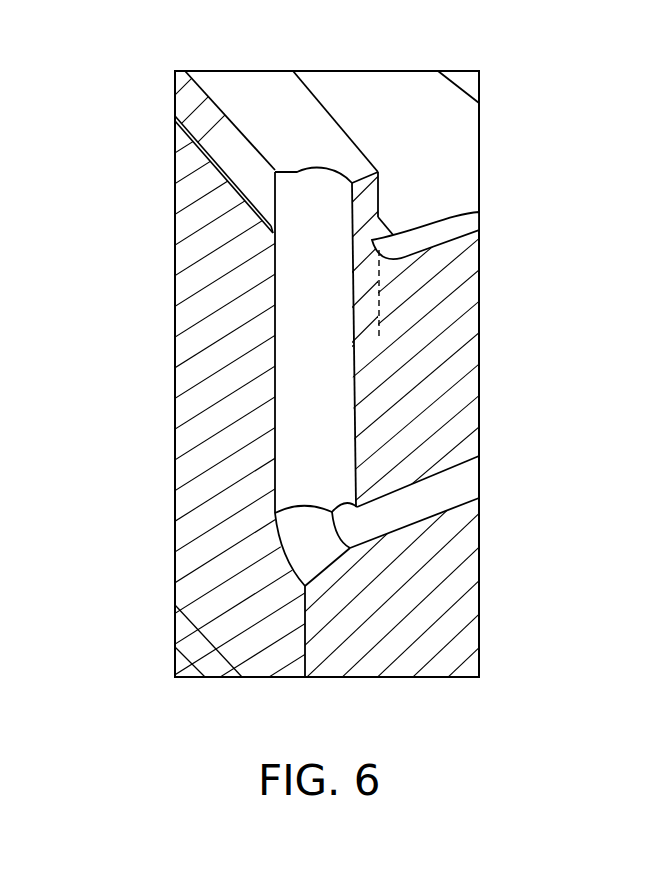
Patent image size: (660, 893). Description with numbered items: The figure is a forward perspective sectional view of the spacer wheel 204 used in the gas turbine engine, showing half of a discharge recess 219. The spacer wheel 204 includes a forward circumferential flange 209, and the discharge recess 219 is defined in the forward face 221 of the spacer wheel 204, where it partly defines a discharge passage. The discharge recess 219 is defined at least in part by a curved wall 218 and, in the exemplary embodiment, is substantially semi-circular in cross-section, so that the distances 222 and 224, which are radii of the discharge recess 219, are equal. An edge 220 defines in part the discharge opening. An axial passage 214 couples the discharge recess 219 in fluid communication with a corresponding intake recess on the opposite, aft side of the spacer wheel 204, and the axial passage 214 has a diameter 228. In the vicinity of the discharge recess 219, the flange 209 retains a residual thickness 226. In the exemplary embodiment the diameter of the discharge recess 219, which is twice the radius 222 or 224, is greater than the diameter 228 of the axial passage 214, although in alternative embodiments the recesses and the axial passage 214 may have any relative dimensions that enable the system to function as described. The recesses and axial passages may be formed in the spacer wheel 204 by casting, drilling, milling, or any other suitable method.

The spacer wheel 204 is at (429, 628).
The forward circumferential flange 209 is at (479, 212).
The axial passage 214 is at (403, 503).
The curved wall 218 is at (336, 421).
The discharge recess 219 is at (307, 308).
The edge 220 is at (268, 219).
The forward face 221 is at (218, 258).
The distance 222 is at (220, 162).
The distance 224 is at (468, 192).
The residual thickness 226 is at (320, 352).
The diameter 228 is at (485, 496).